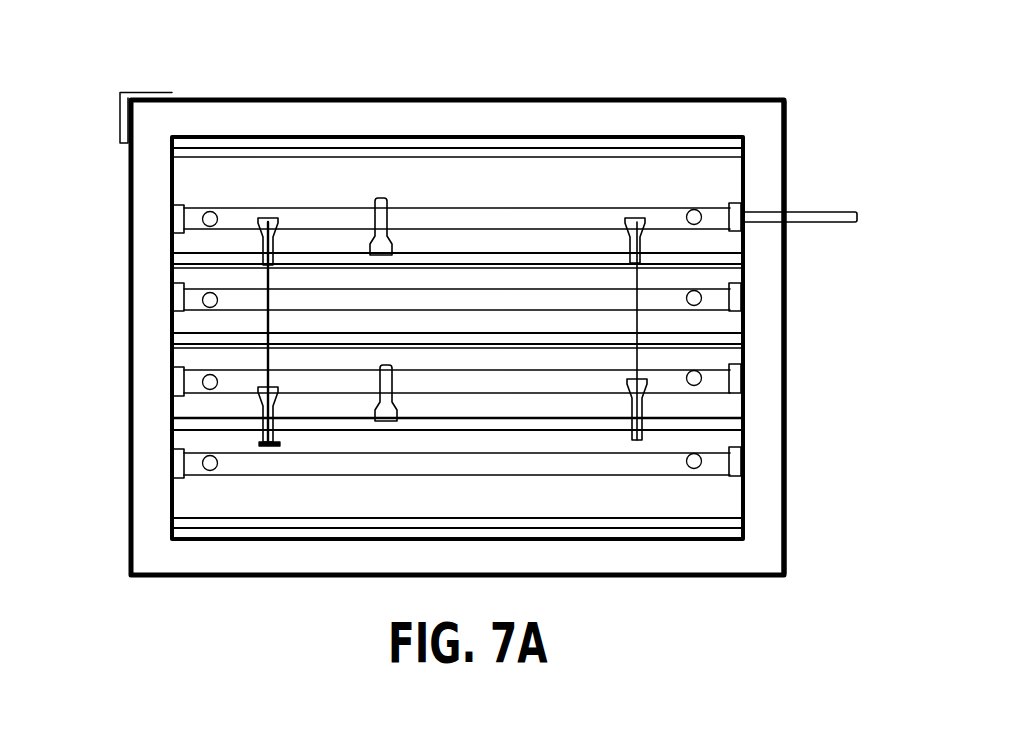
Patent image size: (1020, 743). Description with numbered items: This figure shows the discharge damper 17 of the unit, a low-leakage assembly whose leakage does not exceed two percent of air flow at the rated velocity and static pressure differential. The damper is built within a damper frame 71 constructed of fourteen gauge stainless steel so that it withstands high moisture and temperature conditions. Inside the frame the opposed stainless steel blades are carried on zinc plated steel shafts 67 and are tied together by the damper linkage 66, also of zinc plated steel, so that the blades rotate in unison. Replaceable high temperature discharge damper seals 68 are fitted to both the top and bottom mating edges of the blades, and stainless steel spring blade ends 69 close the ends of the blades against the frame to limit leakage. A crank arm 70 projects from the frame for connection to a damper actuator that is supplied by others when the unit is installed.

The discharge damper 17 is at (441, 99).
The damper linkage 66 is at (262, 240).
The shafts 67 is at (265, 317).
The discharge damper seals 68 is at (172, 415).
The spring blade ends 69 is at (170, 472).
The crank arm 70 is at (857, 214).
The damper frame 71 is at (787, 424).